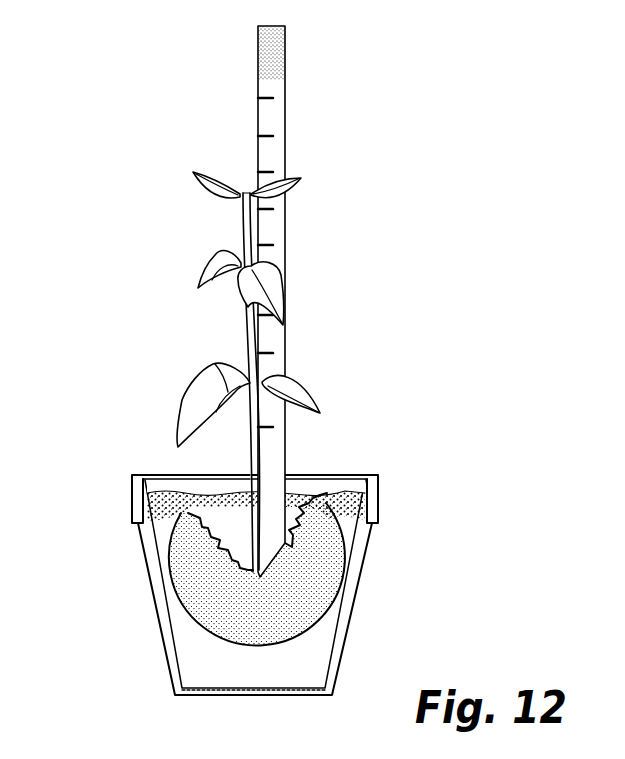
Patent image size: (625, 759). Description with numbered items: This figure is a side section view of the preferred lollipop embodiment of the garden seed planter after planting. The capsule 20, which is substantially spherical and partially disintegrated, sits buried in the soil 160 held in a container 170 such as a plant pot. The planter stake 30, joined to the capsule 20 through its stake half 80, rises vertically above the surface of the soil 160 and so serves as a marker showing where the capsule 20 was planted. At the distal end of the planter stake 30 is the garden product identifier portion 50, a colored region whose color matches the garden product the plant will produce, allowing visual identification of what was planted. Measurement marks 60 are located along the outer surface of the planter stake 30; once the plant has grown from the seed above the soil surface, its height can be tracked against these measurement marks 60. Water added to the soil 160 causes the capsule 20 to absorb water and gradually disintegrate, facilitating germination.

The capsule 20 is at (333, 580).
The planter stake 30 is at (282, 116).
The garden product identifier portion 50 is at (276, 53).
The measurement marks 60 is at (259, 98).
The stake half 80 is at (216, 262).
The soil 160 is at (162, 518).
The container 170 is at (137, 492).